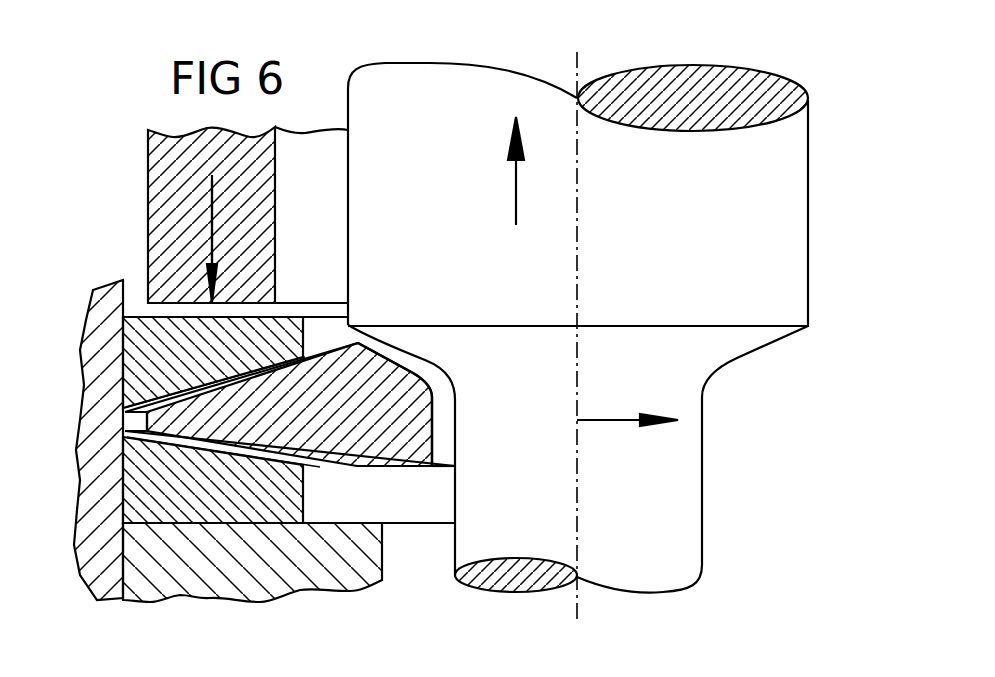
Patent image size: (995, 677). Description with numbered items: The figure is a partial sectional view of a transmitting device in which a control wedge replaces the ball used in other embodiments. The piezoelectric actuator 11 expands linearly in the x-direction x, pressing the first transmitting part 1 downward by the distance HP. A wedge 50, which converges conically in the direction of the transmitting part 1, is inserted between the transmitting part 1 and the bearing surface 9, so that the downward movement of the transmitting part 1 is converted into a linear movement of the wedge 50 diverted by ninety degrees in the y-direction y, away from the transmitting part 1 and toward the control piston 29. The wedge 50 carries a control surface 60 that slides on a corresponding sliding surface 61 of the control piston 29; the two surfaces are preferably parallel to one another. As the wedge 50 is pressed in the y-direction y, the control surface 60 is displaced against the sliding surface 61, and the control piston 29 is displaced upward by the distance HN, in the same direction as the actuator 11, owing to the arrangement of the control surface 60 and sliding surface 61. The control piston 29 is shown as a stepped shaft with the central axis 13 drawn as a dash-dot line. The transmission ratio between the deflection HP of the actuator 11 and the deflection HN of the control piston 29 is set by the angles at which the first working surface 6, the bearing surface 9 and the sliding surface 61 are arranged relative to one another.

The first transmitting part 1 is at (277, 340).
The first working surface 6 is at (190, 386).
The bearing surface 9 is at (191, 445).
The piezoelectric actuator 11 is at (168, 165).
The shaft axis section 13 is at (578, 521).
The control piston 29 is at (665, 488).
The wedge 50 is at (383, 440).
The control surface 60 is at (395, 350).
The sliding surface 61 is at (433, 357).
The deflection of the actuator HP is at (210, 229).
The deflection of the control piston HN is at (512, 193).
The x-direction x is at (213, 200).
The y-direction y is at (627, 404).